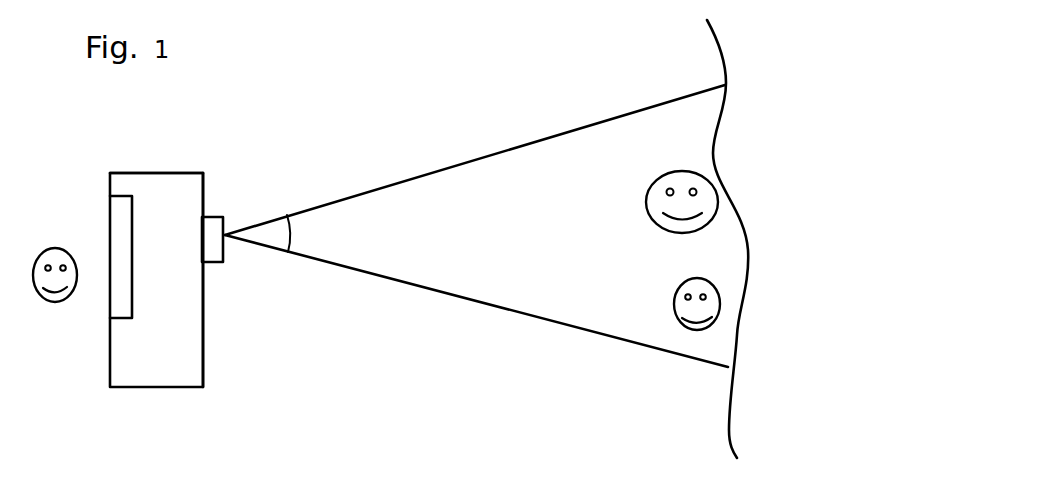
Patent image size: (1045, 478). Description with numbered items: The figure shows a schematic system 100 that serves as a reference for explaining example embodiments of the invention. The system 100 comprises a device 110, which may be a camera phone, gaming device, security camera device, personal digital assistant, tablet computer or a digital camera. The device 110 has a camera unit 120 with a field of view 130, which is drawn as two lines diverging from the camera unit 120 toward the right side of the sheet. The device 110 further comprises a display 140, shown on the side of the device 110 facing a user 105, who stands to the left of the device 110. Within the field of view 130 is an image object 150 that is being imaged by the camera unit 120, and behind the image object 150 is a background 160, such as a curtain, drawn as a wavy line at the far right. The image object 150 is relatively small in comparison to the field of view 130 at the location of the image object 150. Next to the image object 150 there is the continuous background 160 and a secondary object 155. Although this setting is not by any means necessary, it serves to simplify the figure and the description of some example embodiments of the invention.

The system 100 is at (192, 144).
The user 105 is at (47, 323).
The device 110 is at (211, 280).
The camera unit 120 is at (249, 263).
The field of view 130 is at (476, 226).
The display 140 is at (84, 252).
The image object 150 is at (734, 217).
The secondary object 155 is at (748, 324).
The background 160 is at (754, 239).